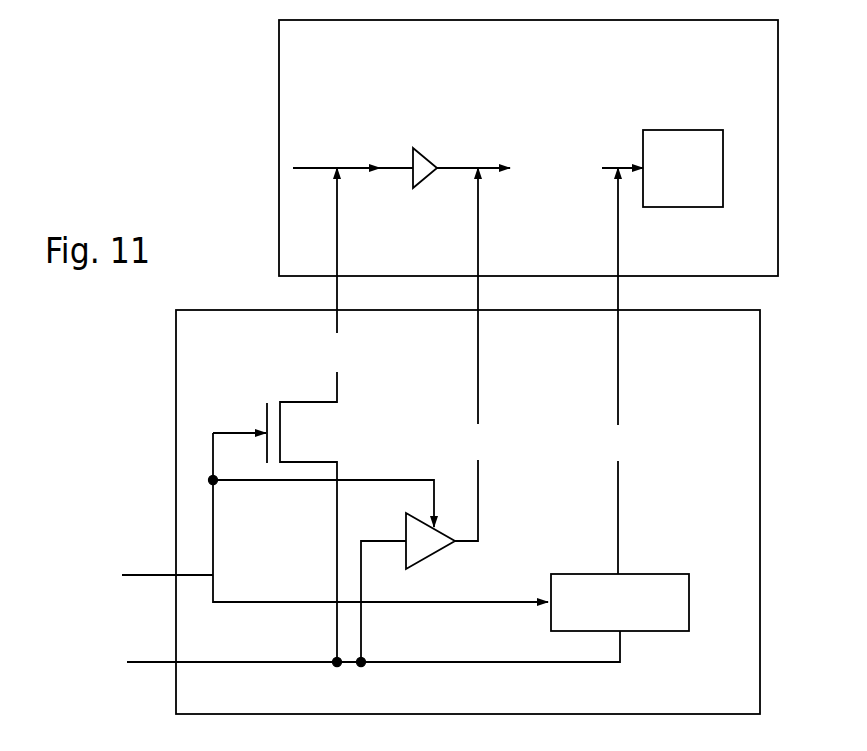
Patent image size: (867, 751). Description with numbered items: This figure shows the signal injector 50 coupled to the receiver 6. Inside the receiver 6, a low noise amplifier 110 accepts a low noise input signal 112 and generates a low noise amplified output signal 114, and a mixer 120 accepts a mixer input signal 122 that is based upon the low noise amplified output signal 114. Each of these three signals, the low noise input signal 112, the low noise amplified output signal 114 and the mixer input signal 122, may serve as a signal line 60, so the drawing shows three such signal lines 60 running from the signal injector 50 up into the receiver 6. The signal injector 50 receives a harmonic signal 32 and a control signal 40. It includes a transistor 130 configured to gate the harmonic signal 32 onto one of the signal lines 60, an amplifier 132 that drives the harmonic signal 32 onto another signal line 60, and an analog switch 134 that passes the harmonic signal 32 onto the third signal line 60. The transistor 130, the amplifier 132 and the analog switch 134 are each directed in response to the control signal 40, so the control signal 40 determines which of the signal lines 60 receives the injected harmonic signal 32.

The receiver 6 is at (528, 148).
The low noise input signal 112 is at (348, 166).
The low noise amplifier 110 is at (427, 181).
The low noise amplified output signal 114 is at (479, 166).
The mixer input signal 122 is at (628, 166).
The mixer 120 is at (683, 168).
The signal injector 50 is at (468, 512).
The signal line 60 is at (380, 417).
The transistor 130 is at (287, 427).
The amplifier 132 is at (434, 554).
The analog switch 134 is at (620, 602).
The control signal 40 is at (119, 574).
The harmonic signal 32 is at (181, 660).